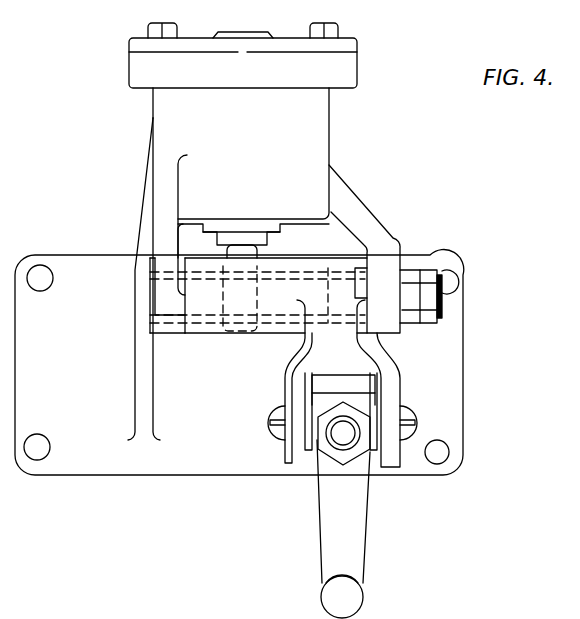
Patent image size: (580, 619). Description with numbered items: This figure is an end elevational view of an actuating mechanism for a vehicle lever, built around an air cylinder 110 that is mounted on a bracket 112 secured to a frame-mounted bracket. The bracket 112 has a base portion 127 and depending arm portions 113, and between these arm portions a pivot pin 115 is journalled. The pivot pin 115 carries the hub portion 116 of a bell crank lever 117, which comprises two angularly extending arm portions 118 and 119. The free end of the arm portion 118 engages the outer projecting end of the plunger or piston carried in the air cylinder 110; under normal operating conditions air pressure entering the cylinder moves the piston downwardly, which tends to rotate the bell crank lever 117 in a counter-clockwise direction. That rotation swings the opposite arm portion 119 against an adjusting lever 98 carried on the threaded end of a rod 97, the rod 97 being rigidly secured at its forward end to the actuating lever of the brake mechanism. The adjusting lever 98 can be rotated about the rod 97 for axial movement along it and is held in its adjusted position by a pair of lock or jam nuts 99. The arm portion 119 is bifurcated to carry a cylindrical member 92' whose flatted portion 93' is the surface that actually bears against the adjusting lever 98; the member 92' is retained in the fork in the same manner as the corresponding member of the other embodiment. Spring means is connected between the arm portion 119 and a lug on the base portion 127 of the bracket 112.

The air cylinder 110 is at (325, 143).
The bracket 112 is at (173, 426).
The depending arm portions 113 is at (162, 237).
The pivot pin 115 is at (446, 291).
The hub portion 116 is at (279, 333).
The bell crank lever 117 is at (333, 258).
The arm portion 118 is at (253, 256).
The arm portion 119 is at (298, 358).
The base portion 127 is at (86, 265).
The cylindrical member 92' is at (375, 370).
The flatted portion 93' is at (383, 388).
The rod 97 is at (333, 453).
The adjusting lever 98 is at (358, 530).
The lock or jam nuts 99 is at (315, 450).